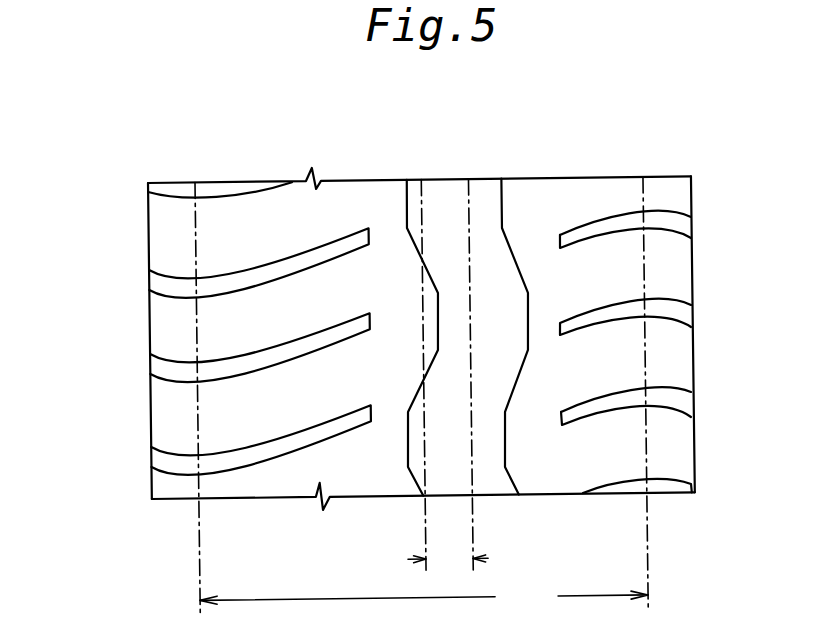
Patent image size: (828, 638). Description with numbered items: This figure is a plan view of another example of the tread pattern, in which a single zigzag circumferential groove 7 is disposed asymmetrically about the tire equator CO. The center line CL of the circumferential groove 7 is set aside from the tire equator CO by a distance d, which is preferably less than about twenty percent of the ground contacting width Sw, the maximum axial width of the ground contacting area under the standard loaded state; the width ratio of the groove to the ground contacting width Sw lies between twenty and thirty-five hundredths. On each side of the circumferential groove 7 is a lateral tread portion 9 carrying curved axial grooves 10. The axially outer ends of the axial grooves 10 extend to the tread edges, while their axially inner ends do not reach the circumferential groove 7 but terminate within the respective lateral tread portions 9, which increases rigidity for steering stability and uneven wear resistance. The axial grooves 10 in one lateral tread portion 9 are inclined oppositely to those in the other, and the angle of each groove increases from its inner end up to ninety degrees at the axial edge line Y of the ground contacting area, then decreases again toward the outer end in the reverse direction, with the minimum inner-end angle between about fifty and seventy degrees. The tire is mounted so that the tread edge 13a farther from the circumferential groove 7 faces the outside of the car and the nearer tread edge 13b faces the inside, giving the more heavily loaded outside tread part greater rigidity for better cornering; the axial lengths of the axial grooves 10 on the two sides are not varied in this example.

The circumferential groove 7 is at (502, 211).
The lateral tread portion 9 is at (330, 200).
The axial groove 10 is at (153, 365).
The tread edge 13a is at (146, 332).
The tread edge 13b is at (692, 297).
The axial edge line of the ground contacting area Y is at (198, 238).
The tire equator CO is at (422, 205).
The center line of the circumferential groove CL is at (467, 444).
The distance d is at (448, 577).
The ground contacting width Sw is at (421, 396).